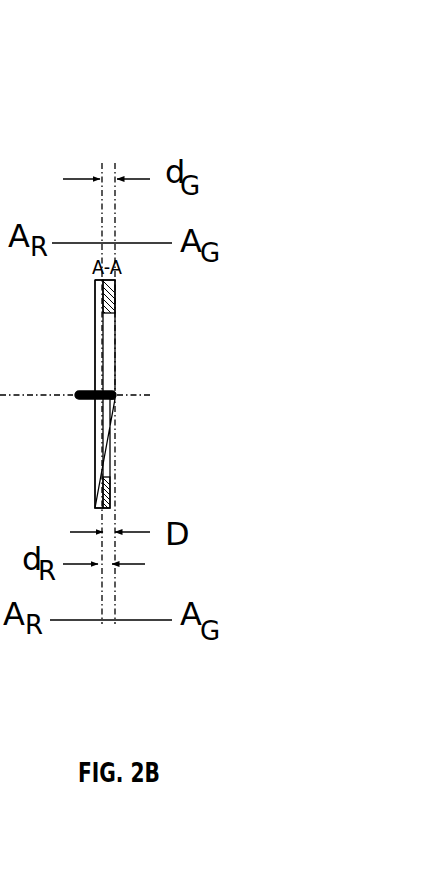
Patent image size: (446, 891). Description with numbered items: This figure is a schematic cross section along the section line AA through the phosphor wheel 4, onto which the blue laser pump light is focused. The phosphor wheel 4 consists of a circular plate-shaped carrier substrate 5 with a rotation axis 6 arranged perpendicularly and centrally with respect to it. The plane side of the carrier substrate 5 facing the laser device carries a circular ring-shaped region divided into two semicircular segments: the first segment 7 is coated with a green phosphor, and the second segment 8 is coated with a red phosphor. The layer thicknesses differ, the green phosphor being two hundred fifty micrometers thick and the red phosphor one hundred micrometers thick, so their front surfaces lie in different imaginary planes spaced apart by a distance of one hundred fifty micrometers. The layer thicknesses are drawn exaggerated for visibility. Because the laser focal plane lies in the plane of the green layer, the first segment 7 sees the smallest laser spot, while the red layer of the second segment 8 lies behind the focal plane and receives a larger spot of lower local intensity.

The phosphor wheel 4 is at (185, 105).
The carrier substrate 5 is at (93, 340).
The rotation axis 6 is at (112, 392).
The first segment 7 is at (117, 295).
The second segment 8 is at (110, 486).